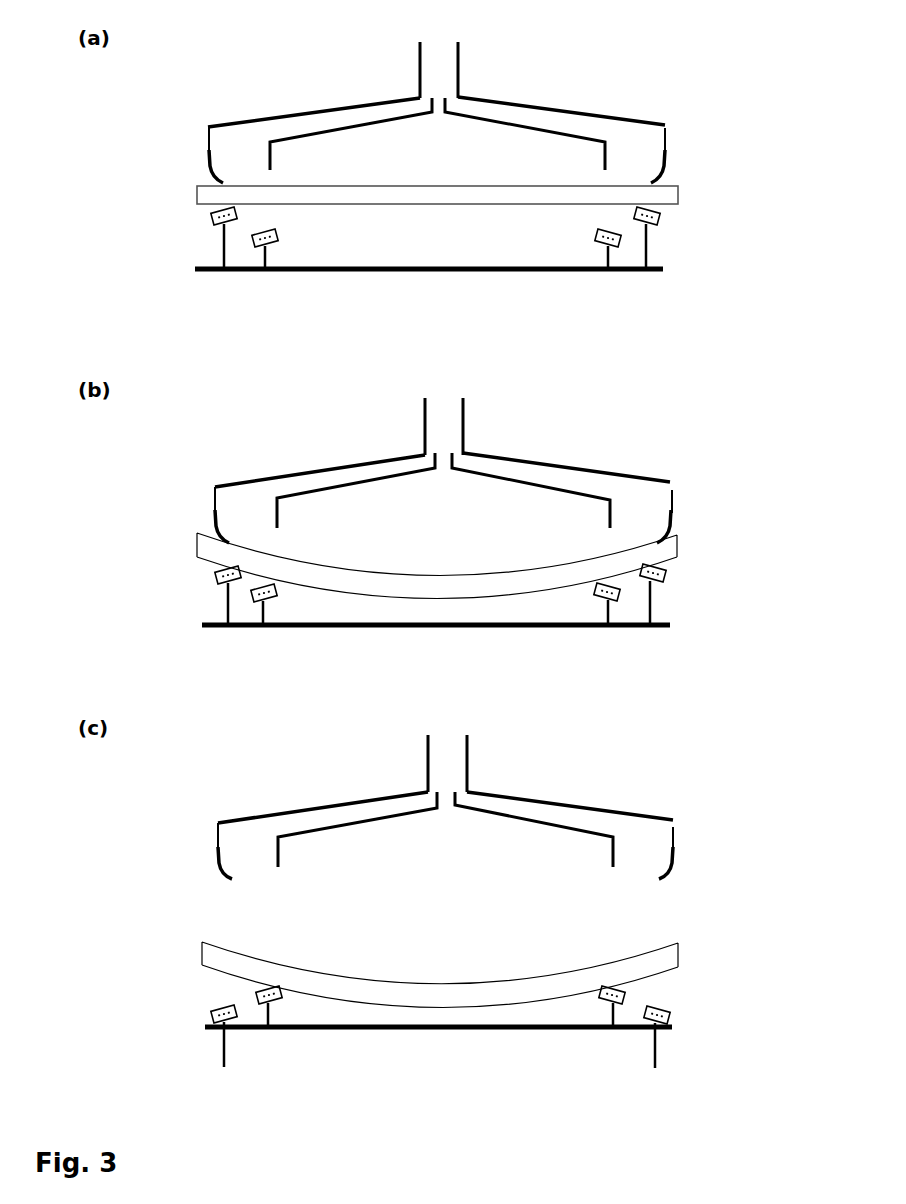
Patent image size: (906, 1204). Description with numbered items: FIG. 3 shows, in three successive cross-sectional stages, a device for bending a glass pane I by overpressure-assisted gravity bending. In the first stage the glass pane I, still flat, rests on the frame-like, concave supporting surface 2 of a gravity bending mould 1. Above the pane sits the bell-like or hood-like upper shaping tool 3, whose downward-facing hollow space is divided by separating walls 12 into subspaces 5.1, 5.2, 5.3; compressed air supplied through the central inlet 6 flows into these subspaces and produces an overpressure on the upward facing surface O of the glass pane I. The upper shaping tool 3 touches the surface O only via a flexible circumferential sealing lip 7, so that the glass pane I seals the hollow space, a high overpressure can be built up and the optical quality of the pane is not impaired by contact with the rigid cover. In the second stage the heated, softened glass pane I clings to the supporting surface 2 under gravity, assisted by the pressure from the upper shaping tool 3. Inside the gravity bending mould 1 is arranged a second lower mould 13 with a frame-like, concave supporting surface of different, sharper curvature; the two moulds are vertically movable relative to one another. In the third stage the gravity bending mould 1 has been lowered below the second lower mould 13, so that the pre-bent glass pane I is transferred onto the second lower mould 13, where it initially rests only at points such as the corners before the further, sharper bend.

The gravity bending mould 1 is at (648, 248).
The supporting surface 2 is at (662, 215).
The upper shaping tool 3 is at (588, 110).
The subspace 5.1 is at (410, 146).
The subspace 5.2 is at (246, 147).
The subspace 5.3 is at (641, 141).
The supply tube 6 is at (452, 63).
The sealing lip 7 is at (662, 177).
The separating walls 12 is at (331, 128).
The second lower mould 13 is at (603, 255).
The upper surface O is at (197, 185).
The glass pane I is at (202, 197).